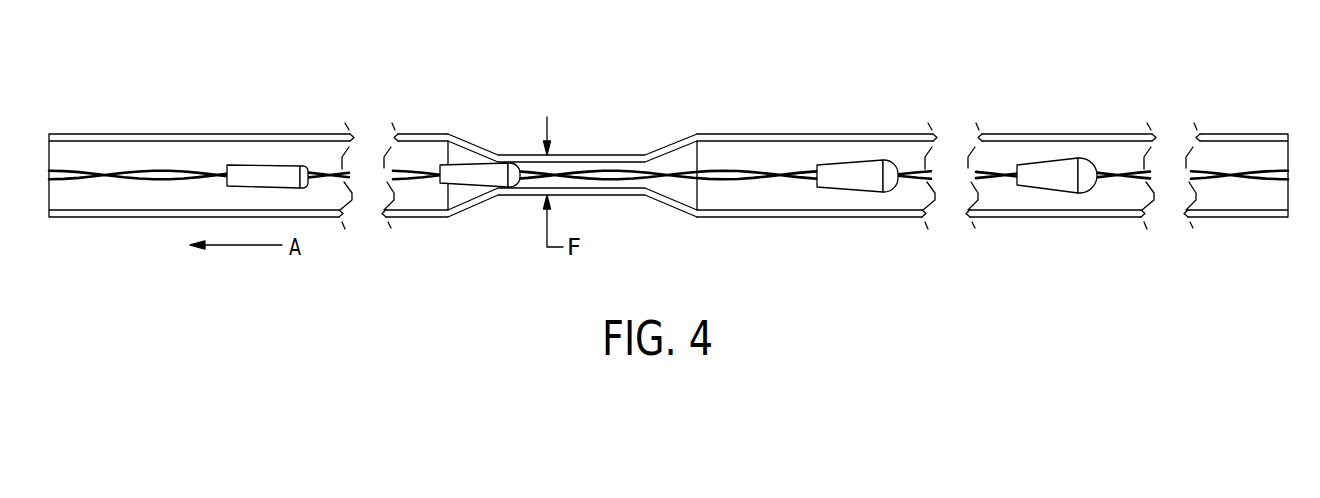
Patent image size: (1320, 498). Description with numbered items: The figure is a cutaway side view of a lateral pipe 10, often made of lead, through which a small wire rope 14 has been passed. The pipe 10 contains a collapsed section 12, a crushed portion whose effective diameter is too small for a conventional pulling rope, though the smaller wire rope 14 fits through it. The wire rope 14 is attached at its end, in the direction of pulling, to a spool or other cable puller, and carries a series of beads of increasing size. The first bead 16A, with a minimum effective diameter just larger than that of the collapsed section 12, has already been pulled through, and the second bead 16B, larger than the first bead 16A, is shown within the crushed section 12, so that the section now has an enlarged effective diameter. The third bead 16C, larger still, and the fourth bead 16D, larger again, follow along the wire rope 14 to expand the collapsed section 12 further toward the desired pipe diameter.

The pipe 10 is at (1012, 217).
The collapsed section 12 is at (592, 153).
The small wire rope 14 is at (747, 182).
The first bead 16A is at (268, 170).
The second bead 16B is at (497, 175).
The third bead 16C is at (867, 168).
The fourth bead 16D is at (1068, 168).